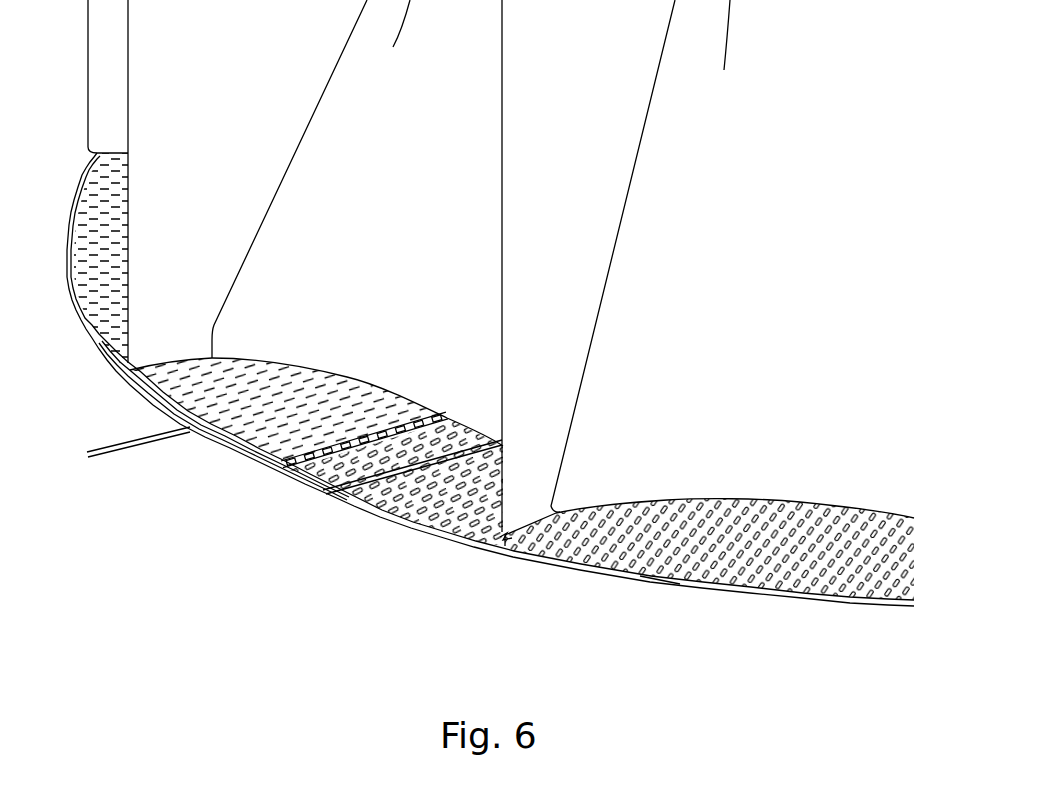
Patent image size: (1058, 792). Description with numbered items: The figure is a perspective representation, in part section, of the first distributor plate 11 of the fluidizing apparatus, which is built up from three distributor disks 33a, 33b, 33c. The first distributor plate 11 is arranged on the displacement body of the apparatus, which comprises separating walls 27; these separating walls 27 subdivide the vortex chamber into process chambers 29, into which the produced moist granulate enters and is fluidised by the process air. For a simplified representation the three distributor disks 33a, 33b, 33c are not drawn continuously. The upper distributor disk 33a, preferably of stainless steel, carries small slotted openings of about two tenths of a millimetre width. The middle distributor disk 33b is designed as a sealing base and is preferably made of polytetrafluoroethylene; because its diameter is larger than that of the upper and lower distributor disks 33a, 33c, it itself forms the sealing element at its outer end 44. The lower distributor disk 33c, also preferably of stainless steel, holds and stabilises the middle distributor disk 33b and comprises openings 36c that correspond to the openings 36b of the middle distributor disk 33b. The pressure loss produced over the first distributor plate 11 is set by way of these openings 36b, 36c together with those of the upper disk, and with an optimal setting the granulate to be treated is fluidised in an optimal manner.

The first distributor plate 11 is at (480, 570).
The separating walls 27 is at (105, 113).
The process chambers 29 is at (115, 198).
The upper distributor disk 33a is at (157, 384).
The middle distributor disk 33b is at (280, 475).
The lower distributor disk 33c is at (657, 575).
The openings of the middle distributor disk 36b is at (350, 480).
The openings of the lower distributor disk 36c is at (418, 518).
The outer end 44 is at (302, 492).